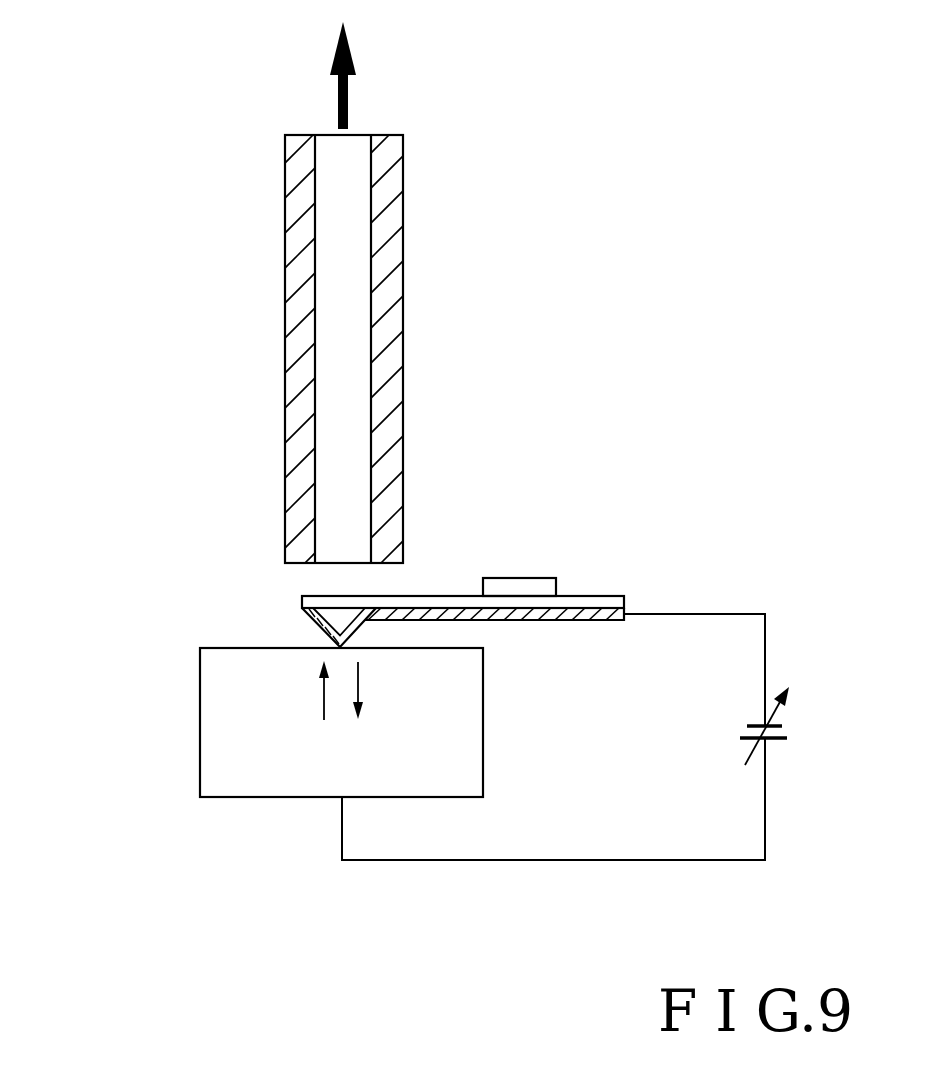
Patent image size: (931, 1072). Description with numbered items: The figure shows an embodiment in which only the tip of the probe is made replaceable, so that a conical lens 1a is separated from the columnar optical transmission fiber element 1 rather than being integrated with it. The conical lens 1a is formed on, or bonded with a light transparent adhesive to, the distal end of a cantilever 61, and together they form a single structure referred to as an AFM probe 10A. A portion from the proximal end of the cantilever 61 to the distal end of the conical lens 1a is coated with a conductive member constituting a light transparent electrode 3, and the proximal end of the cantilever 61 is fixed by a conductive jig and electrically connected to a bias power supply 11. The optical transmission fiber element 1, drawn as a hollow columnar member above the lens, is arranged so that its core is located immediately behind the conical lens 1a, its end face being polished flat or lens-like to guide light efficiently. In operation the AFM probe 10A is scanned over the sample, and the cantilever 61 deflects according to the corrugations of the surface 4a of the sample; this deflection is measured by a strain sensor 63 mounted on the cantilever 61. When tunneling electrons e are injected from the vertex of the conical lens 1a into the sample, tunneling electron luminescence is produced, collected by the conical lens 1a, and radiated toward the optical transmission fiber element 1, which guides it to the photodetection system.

The optical transmission fiber element 1 is at (331, 327).
The conical lens 1a is at (341, 615).
The light transparent electrode 3 is at (325, 632).
The surface of sample 4a is at (200, 737).
The cantilever 61 is at (425, 598).
The strain sensor 63 is at (525, 588).
The AFM probe 10A is at (627, 482).
The bias power supply 11 is at (792, 732).
The tunneling electrons e is at (320, 705).